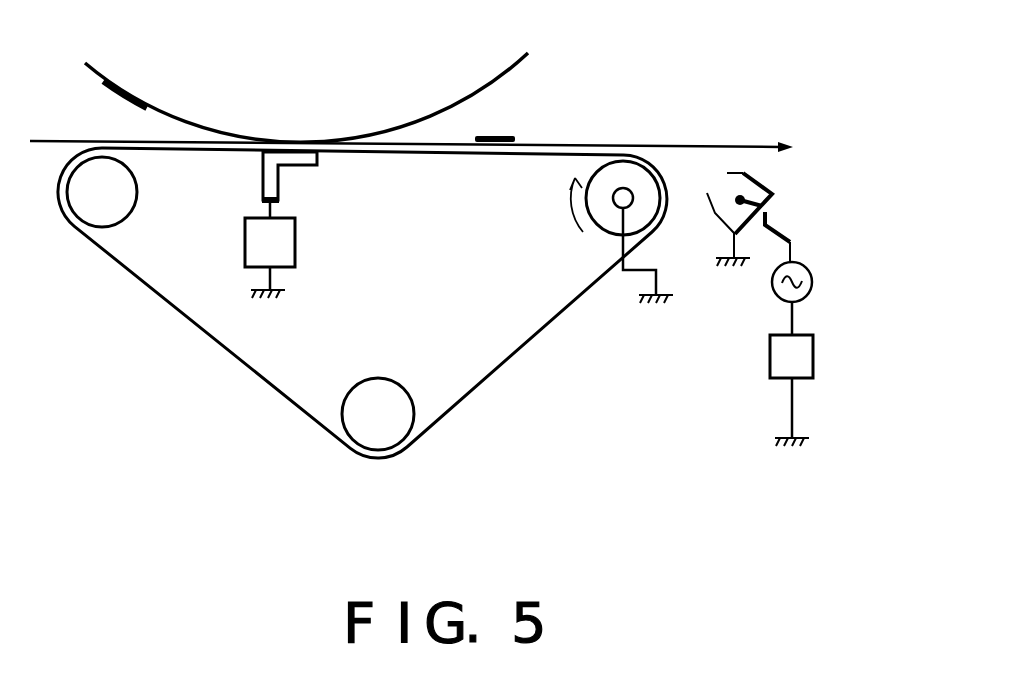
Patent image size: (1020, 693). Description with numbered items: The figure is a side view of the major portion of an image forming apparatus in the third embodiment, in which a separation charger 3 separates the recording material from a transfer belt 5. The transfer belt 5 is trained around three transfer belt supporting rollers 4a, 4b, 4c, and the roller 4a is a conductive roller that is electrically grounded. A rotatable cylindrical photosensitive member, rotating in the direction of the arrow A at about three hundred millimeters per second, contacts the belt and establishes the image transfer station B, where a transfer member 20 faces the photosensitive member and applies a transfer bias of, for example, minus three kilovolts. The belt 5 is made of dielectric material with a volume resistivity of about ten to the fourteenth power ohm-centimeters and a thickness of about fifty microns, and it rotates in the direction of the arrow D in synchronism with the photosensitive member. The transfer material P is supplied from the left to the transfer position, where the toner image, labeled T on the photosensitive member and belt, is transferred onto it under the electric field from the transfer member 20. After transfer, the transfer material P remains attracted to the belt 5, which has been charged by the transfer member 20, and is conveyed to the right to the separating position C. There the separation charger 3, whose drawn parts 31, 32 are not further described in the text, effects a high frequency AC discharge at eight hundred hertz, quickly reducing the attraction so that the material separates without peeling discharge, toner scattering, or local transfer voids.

The separation charger 3 is at (804, 303).
The transfer belt supporting roller 4a is at (604, 215).
The transfer belt supporting roller 4b is at (90, 210).
The transfer belt supporting roller 4c is at (390, 425).
The transfer belt 5 is at (222, 351).
The transfer member 20 is at (283, 193).
The switch blade 31 is at (767, 182).
The switch contact arm 32 is at (767, 210).
The arrow indicating rotation direction of photosensitive member A is at (397, 95).
The image transfer station B is at (291, 113).
The separating position C is at (666, 124).
The arrow indicating belt rotation direction D is at (418, 178).
The transfer material P is at (422, 147).
The toner image T is at (120, 92).